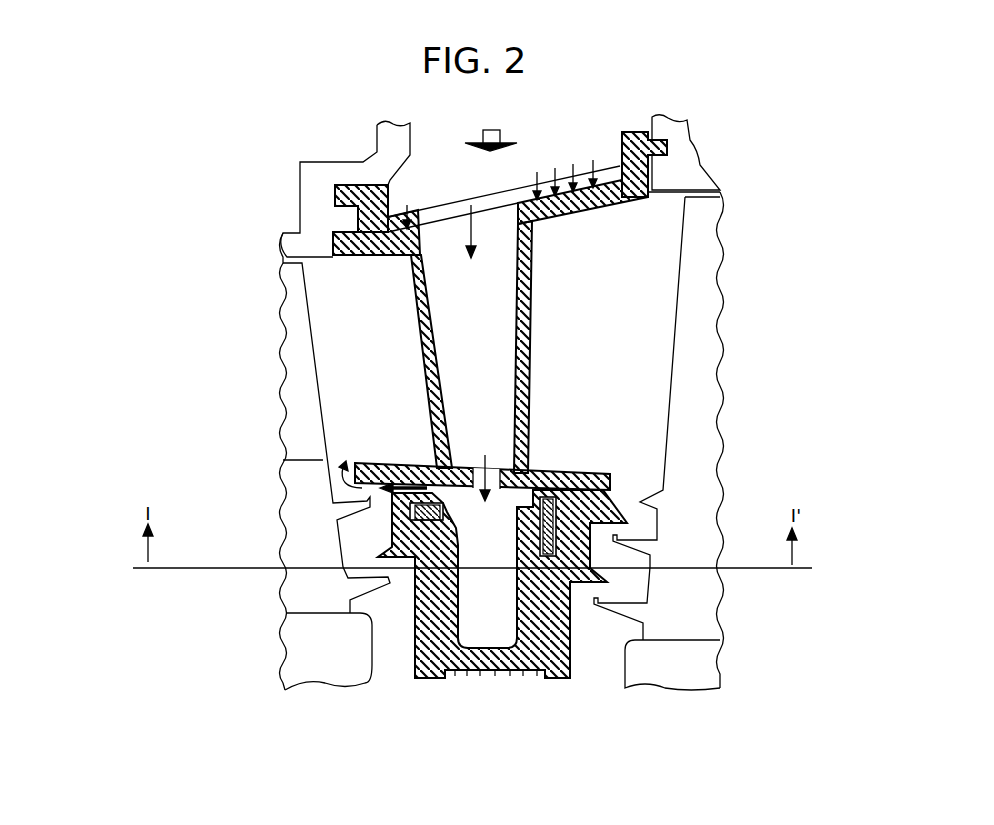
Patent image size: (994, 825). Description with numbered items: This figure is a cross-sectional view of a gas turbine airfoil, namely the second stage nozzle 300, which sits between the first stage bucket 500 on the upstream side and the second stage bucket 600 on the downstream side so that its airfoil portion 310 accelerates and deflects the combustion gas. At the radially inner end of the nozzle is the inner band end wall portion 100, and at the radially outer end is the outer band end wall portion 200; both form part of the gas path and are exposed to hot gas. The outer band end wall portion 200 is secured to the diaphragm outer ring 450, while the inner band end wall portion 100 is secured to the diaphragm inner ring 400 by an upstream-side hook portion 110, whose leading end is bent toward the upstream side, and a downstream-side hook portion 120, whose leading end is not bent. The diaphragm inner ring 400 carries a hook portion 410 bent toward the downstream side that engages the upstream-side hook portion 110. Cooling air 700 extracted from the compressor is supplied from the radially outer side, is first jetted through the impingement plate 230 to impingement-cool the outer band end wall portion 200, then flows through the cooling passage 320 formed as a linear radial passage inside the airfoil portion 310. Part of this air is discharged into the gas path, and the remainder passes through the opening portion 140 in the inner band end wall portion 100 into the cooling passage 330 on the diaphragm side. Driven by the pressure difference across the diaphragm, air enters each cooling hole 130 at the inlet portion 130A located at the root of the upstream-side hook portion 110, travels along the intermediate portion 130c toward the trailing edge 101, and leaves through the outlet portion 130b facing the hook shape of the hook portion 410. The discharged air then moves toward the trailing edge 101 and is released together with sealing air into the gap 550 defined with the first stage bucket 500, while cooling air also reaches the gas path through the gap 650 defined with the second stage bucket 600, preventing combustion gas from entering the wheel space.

The inner band end wall portion 100 is at (577, 475).
The trailing edge 101 is at (340, 455).
The upstream-side hook portion 110 is at (463, 547).
The downstream-side hook portion 120 is at (565, 592).
The cooling hole 130 is at (432, 465).
The inlet portion 130A is at (445, 487).
The outlet portion 130b is at (432, 467).
The intermediate portion 130c is at (443, 458).
The opening portion 140 is at (527, 458).
The outer band end wall portion 200 is at (596, 200).
The impingement plate 230 is at (583, 173).
The second stage nozzle 300 is at (566, 353).
The airfoil portion 310 is at (532, 340).
The cooling passage 320 is at (454, 349).
The cooling passage 330 is at (505, 639).
The diaphragm inner ring 400 is at (413, 588).
The hook portion 410 is at (393, 518).
The diaphragm outer ring 450 is at (303, 183).
The first stage bucket 500 is at (287, 335).
The gap 550 is at (397, 684).
The second stage bucket 600 is at (712, 343).
The gap 650 is at (598, 684).
The cooling air 700 is at (503, 137).